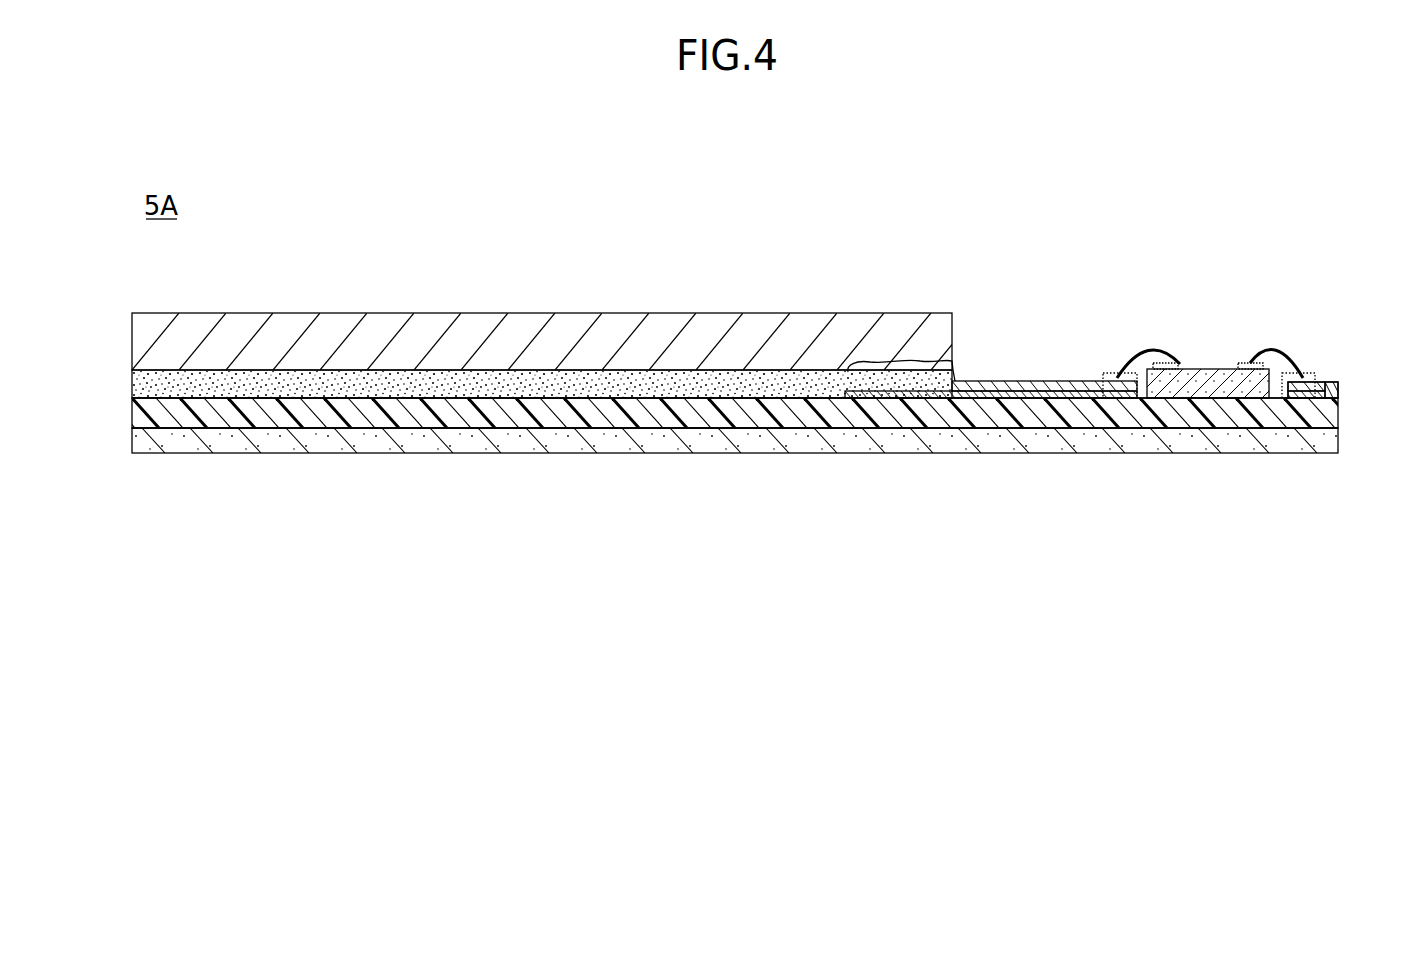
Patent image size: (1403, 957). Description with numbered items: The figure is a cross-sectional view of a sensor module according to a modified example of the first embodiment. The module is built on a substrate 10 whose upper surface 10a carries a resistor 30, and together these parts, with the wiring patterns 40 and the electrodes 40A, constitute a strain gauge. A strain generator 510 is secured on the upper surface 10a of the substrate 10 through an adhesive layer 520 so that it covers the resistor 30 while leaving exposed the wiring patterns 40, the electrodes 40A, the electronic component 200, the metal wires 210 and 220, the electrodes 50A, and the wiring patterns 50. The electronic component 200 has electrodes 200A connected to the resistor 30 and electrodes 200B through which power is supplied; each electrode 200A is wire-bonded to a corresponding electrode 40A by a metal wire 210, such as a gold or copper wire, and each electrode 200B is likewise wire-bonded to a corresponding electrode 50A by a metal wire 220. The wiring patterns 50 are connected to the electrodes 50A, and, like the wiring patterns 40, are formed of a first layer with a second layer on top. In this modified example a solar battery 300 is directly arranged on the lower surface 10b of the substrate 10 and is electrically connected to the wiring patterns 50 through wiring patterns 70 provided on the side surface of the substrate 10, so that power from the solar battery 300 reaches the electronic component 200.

The substrate 10 is at (150, 410).
The upper surface of the substrate 10a is at (155, 386).
The lower surface of the substrate 10b is at (150, 438).
The resistor 30 is at (898, 361).
The wiring patterns 40 is at (991, 483).
The electrodes 40A is at (1108, 372).
The wiring patterns 50 is at (1282, 484).
The electrodes 50A is at (1308, 373).
The wiring patterns 70 is at (1338, 392).
The electronic component 200 is at (1208, 369).
The electrodes 200A is at (1172, 362).
The electrodes 200B is at (1245, 362).
The metal wire 210 is at (1152, 362).
The metal wire 220 is at (1268, 362).
The solar battery 300 is at (1165, 440).
The strain generator 510 is at (683, 314).
The adhesive layer 520 is at (787, 382).